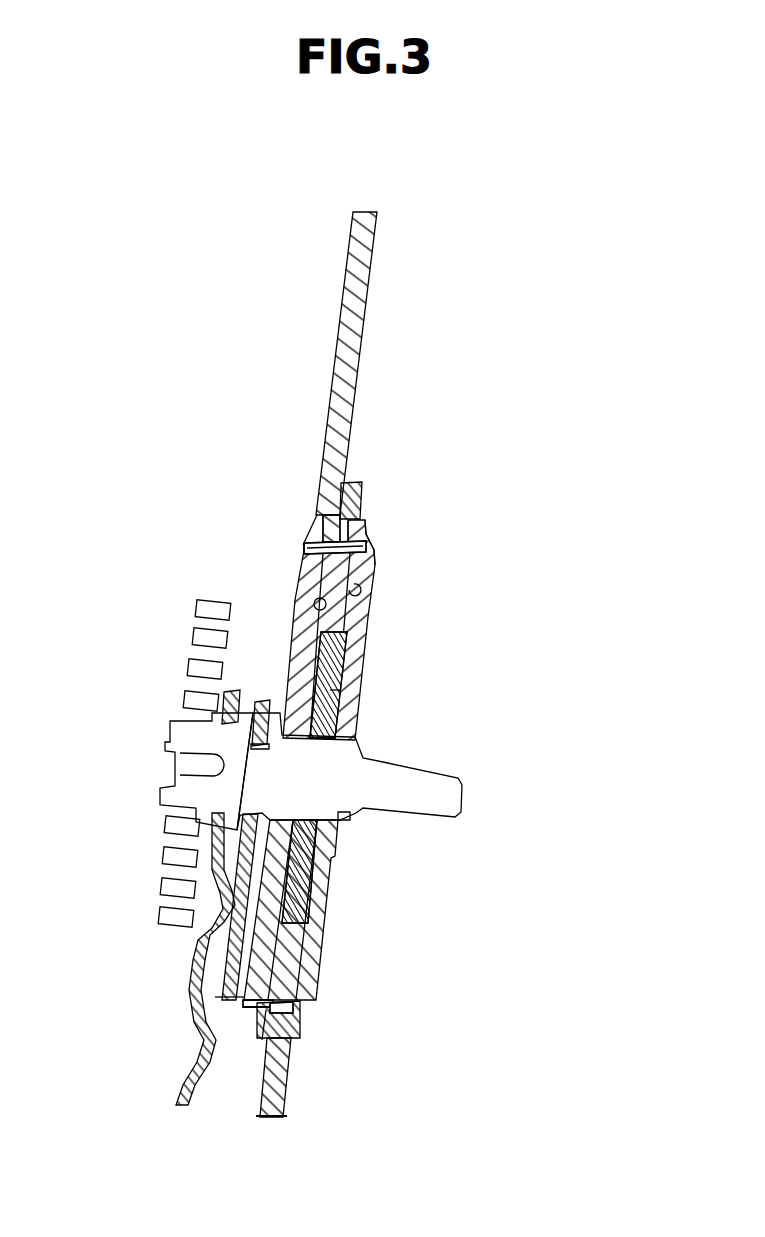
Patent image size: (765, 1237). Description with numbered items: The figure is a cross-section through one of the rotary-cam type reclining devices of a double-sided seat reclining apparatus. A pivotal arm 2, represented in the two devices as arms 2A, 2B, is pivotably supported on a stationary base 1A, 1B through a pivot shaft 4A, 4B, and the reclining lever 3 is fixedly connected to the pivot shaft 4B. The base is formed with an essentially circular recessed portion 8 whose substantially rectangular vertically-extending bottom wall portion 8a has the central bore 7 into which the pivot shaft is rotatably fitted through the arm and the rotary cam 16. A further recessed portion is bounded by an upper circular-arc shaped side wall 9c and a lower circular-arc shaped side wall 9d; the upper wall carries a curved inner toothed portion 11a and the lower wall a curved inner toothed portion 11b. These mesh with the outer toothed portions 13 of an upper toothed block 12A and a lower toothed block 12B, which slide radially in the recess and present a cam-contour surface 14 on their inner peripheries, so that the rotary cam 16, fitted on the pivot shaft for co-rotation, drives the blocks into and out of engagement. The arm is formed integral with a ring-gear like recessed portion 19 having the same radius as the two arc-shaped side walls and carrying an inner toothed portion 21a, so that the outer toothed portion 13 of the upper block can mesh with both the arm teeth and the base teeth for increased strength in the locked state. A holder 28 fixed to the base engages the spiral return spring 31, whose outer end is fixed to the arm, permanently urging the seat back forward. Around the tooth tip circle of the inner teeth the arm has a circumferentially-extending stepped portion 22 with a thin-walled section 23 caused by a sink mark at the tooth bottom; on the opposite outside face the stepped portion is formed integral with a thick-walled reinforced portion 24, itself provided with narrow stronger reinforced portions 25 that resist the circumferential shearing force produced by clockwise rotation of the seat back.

The pivotal arm 2 is at (443, 377).
The pivotal arm 2A is at (443, 377).
The pivotal arm 2B is at (362, 313).
The stronger reinforced portion 25 is at (313, 541).
The stepped portion 22 is at (347, 515).
The upper circular-arc shaped side wall 9c is at (364, 522).
The outer toothed portion 13 is at (371, 537).
The curved inner toothed portion 11a is at (375, 566).
The circular recessed portion 8 is at (374, 584).
The upper toothed block 12A is at (318, 560).
The bottom wall portion 8a is at (366, 630).
The ring-gear like recessed portion 19 is at (312, 606).
The cam-contour surface 14 is at (348, 660).
The rotary cam 16 is at (356, 688).
The thin-walled section 23 is at (307, 543).
The inner toothed portion 21a is at (307, 540).
The return spring 31 is at (196, 608).
The pivot shaft 4A is at (366, 771).
The pivot shaft 4B is at (348, 760).
The central bore 7 is at (345, 819).
The lower toothed block 12B is at (320, 972).
The reclining lever 3 is at (222, 998).
The holder 28 is at (174, 1092).
The lower circular-arc shaped side wall 9d is at (300, 1040).
The curved inner toothed portion 11b is at (300, 1008).
The stationary base 1A is at (334, 1080).
The stationary base 1B is at (285, 1088).
The reinforced portion 24 is at (262, 1040).